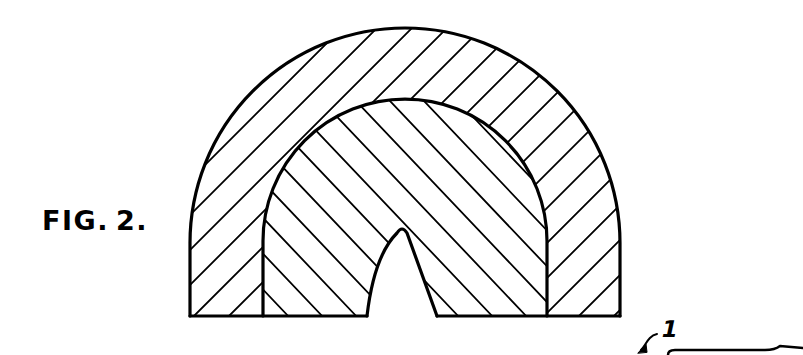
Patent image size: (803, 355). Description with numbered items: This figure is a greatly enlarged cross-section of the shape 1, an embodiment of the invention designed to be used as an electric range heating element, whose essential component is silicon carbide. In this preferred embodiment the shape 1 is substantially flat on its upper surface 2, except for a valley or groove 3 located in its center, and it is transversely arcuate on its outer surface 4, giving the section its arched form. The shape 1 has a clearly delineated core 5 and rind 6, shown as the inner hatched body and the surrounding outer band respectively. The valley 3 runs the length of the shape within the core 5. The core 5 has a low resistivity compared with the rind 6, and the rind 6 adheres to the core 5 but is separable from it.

The shape 1 is at (621, 203).
The upper surface 2 is at (269, 318).
The valley or groove 3 is at (421, 272).
The outer surface 4 is at (511, 56).
The core 5 is at (508, 306).
The rind 6 is at (608, 230).